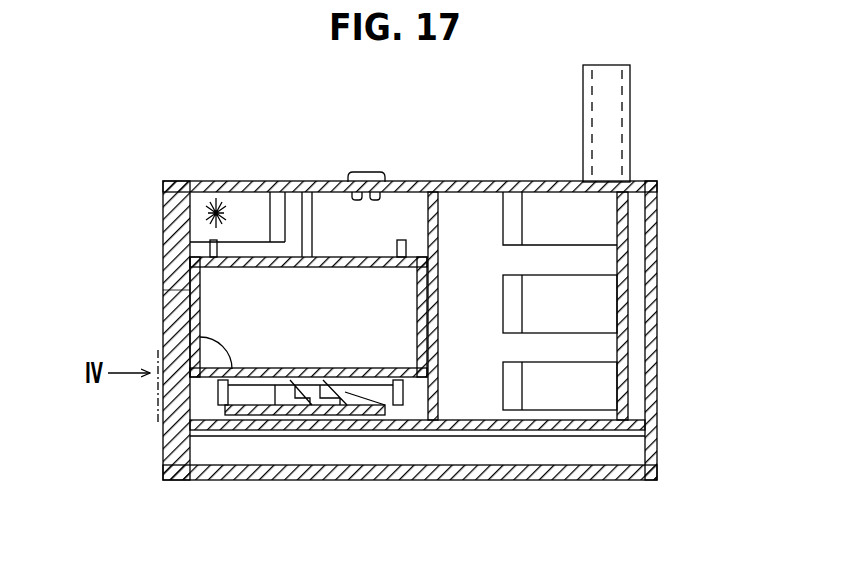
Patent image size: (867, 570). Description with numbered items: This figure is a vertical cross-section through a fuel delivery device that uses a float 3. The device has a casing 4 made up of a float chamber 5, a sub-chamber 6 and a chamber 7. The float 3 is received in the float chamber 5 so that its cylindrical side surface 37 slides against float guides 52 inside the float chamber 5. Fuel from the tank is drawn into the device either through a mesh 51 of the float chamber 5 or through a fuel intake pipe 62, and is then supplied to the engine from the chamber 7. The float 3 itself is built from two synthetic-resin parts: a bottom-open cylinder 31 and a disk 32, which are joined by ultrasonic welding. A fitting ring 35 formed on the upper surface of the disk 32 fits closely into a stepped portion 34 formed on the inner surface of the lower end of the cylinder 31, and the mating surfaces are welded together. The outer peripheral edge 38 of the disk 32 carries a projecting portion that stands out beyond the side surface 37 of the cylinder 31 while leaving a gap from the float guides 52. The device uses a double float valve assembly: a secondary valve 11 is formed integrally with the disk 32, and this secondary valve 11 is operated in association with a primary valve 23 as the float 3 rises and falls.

The float 3 is at (248, 245).
The casing 4 is at (440, 180).
The float chamber 5 is at (387, 220).
The sub-chamber 6 is at (476, 205).
The chamber 7 is at (580, 460).
The secondary valve 11 is at (437, 433).
The primary valve 23 is at (342, 400).
The bottom-open cylinder 31 is at (188, 272).
The disk 32 is at (222, 403).
The stepped portion 34 is at (232, 352).
The fitting ring 35 is at (225, 440).
The side surface 37 is at (182, 305).
The outer peripheral edge 38 is at (200, 378).
The mesh 51 is at (208, 210).
The float guides 52 is at (318, 255).
The fuel intake pipe 62 is at (613, 125).